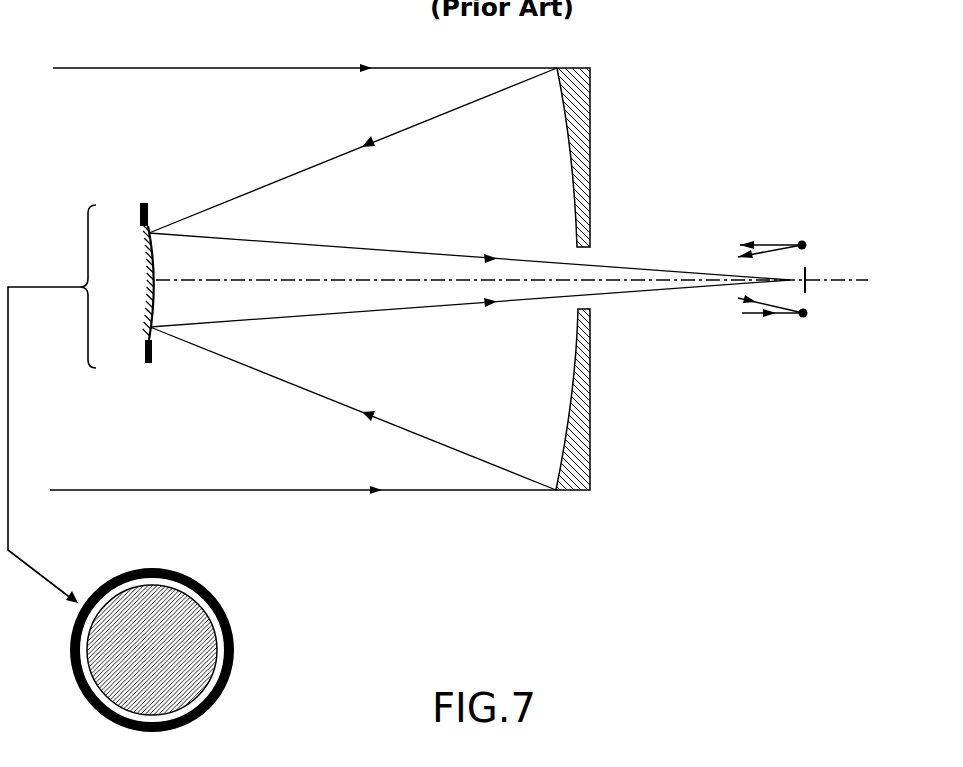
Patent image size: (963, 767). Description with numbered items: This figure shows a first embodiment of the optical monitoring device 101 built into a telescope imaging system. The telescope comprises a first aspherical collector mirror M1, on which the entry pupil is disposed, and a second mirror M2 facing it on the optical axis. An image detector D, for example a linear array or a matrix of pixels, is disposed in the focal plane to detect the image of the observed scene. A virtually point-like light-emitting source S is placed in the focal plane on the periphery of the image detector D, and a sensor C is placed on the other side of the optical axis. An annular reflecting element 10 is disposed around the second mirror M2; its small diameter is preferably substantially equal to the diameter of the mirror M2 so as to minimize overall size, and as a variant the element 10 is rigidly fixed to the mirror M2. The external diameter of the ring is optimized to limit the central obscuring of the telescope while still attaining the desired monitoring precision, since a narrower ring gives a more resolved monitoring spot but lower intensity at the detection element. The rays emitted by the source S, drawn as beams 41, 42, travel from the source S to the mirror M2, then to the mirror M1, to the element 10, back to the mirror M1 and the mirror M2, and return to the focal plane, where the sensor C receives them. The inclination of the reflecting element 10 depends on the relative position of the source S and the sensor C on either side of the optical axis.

The prior art two-mirror telescope optical system 101 is at (284, 44).
The first aspherical collector mirror M1 is at (583, 132).
The second mirror M2 is at (147, 298).
The annular reflecting element 10 is at (149, 202).
The first beam 41 is at (745, 242).
The second beam 42 is at (772, 245).
The light-emitting source S is at (803, 245).
The image detector D is at (808, 275).
The sensor C is at (803, 313).